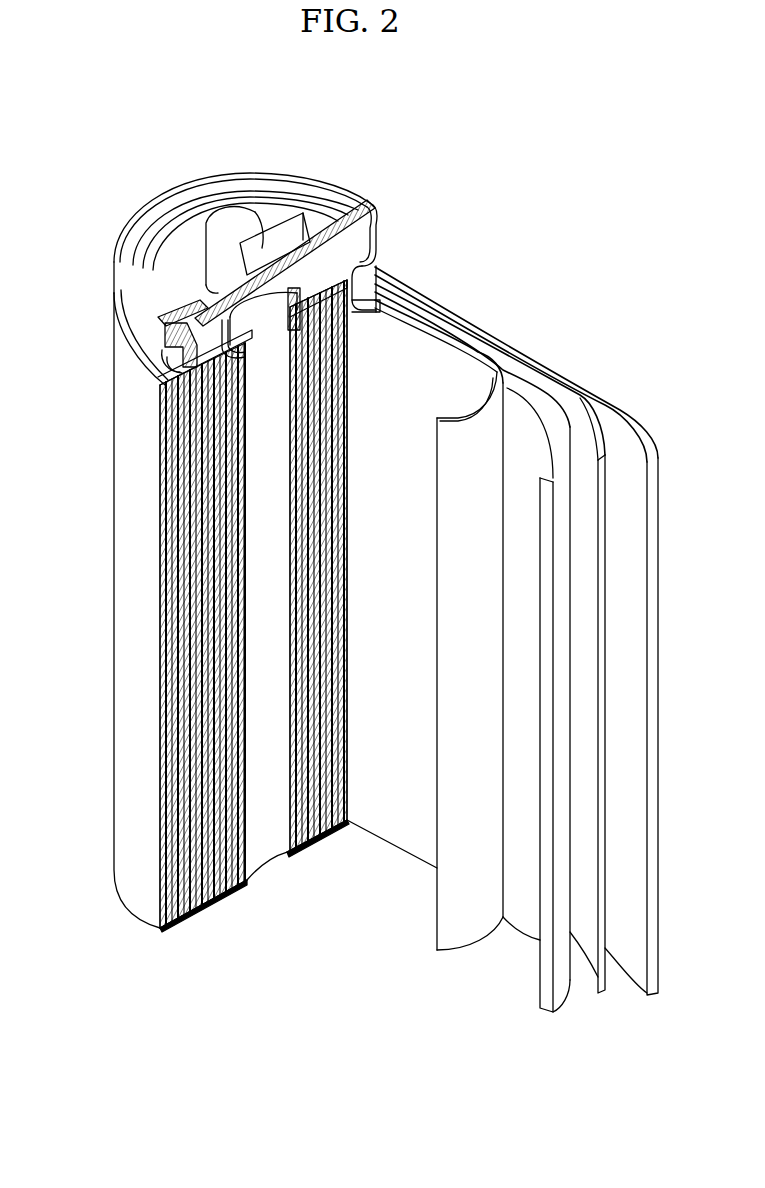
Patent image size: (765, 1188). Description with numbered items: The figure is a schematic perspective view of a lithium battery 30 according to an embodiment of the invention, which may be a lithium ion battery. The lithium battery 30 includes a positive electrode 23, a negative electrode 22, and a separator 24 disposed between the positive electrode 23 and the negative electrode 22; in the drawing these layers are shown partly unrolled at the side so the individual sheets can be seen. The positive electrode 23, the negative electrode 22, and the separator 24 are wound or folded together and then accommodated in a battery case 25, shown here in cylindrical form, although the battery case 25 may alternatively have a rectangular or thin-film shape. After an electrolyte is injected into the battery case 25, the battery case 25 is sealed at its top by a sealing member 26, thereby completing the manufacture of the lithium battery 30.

The lithium battery 30 is at (328, 118).
The battery case 25 is at (120, 598).
The sealing member 26 is at (239, 222).
The separator 24 is at (474, 420).
The positive electrode 23 is at (557, 425).
The negative electrode 22 is at (633, 428).